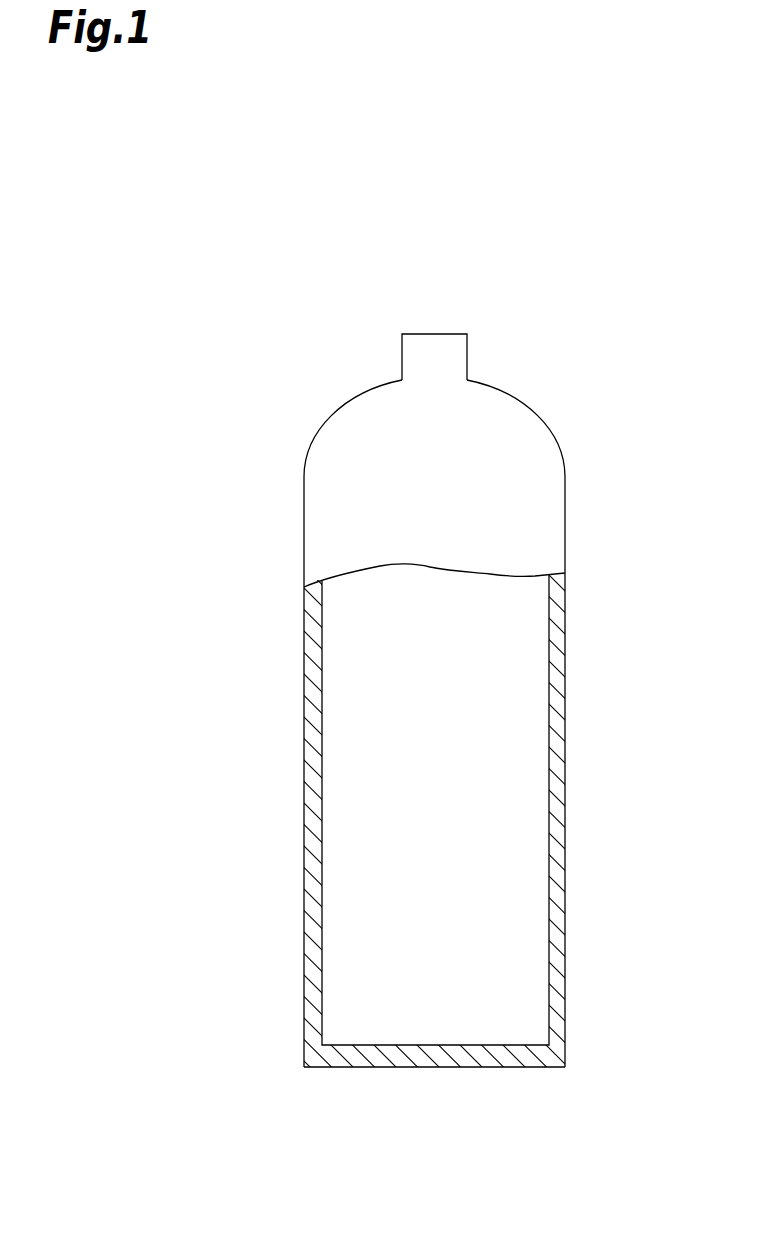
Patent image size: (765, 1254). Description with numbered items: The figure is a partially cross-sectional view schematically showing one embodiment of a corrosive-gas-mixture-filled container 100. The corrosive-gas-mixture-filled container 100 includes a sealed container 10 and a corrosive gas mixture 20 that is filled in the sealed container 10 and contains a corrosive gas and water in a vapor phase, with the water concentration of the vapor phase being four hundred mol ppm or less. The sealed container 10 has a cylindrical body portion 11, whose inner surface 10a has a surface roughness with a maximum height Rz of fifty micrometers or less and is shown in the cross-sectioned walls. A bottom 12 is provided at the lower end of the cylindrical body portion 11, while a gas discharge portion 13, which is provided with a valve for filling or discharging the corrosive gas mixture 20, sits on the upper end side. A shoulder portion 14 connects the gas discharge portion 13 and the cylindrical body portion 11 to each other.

The corrosive-gas-mixture-filled container 100 is at (617, 191).
The sealed container 10 is at (440, 330).
The inner surface 10a is at (549, 897).
The cylindrical body portion 11 is at (559, 760).
The bottom 12 is at (437, 1068).
The gas discharge portion 13 is at (471, 353).
The shoulder portion 14 is at (349, 400).
The corrosive gas mixture 20 is at (345, 653).